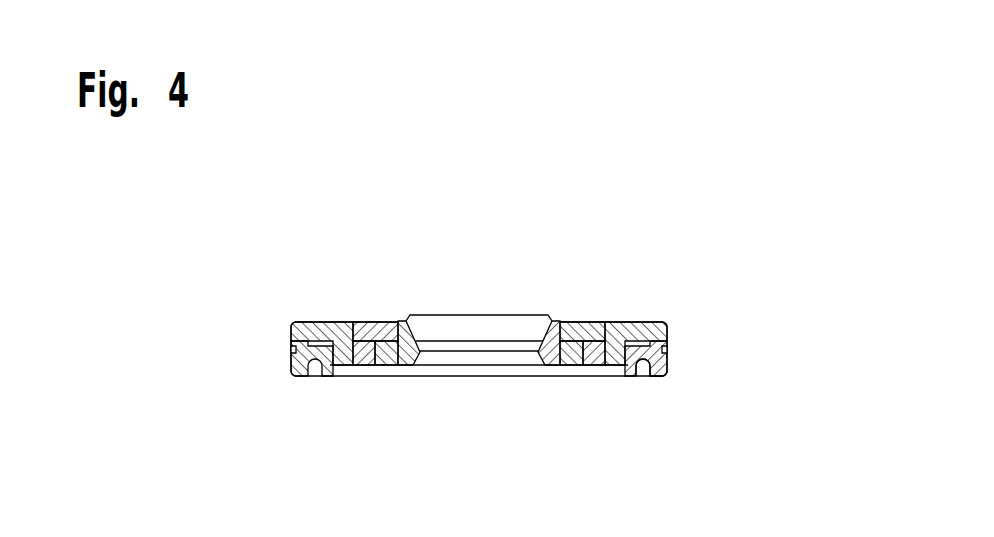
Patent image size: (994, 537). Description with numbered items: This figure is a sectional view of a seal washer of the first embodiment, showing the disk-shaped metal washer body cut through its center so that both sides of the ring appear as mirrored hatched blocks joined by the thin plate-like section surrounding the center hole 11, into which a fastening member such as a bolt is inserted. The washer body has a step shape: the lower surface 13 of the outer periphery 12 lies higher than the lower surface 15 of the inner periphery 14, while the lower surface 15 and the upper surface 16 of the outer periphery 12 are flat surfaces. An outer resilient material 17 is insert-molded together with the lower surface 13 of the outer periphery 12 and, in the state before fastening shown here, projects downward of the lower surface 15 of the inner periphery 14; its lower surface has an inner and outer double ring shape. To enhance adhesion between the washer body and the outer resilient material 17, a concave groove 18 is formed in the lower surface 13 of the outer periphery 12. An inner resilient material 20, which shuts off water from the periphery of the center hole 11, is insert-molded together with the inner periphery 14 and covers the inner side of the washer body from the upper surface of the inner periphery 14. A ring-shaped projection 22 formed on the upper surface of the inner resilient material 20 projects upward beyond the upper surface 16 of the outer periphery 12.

The center hole 11 is at (476, 325).
The outer periphery 12 is at (640, 323).
The lower surface 13 is at (667, 352).
The inner periphery 14 is at (558, 376).
The lower surface 15 is at (593, 376).
The upper surface 16 is at (653, 323).
The outer resilient material 17 is at (663, 377).
The concave groove 18 is at (633, 374).
The inner resilient material 20 is at (587, 323).
The ring-shaped projection 22 is at (556, 320).